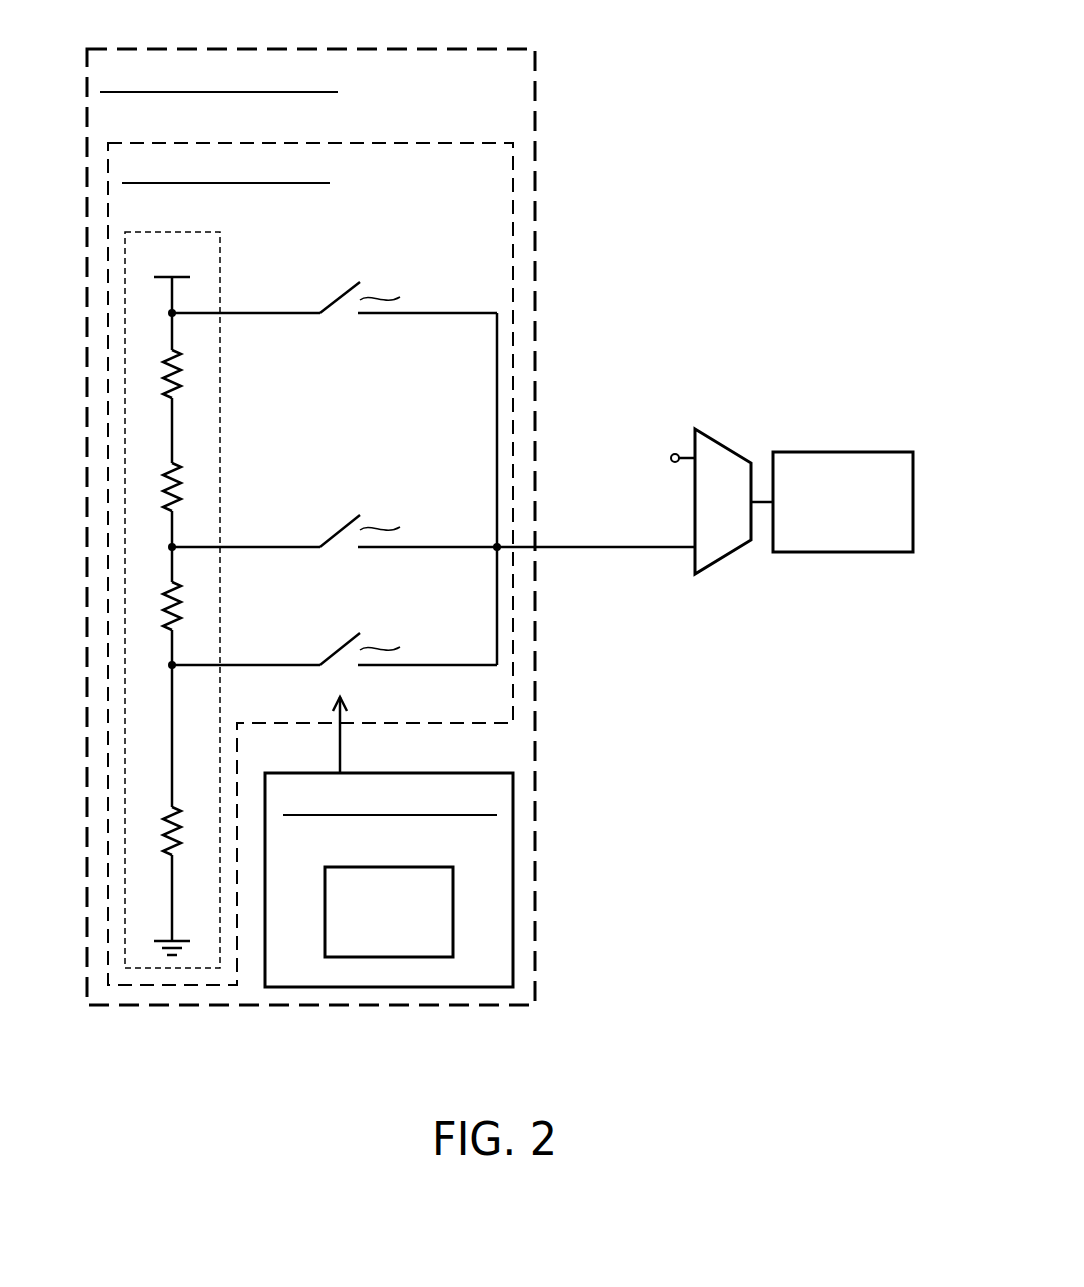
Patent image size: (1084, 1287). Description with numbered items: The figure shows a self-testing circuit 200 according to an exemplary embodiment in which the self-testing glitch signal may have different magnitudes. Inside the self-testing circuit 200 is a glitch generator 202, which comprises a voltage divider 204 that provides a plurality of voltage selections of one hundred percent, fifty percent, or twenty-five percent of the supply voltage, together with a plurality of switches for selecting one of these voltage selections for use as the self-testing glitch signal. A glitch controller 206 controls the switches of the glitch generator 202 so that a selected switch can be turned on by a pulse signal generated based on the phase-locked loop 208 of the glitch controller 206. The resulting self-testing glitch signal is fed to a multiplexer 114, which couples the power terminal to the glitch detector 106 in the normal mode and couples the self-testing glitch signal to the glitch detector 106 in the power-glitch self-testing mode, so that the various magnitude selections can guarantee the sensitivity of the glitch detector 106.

The self-testing circuit 200 is at (87, 49).
The glitch generator 202 is at (108, 143).
The voltage divider 204 is at (125, 232).
The glitch controller 206 is at (390, 773).
The phase-locked loop (PLL) 208 is at (325, 867).
The multiplexer 114 is at (724, 445).
The glitch detector 106 is at (773, 452).